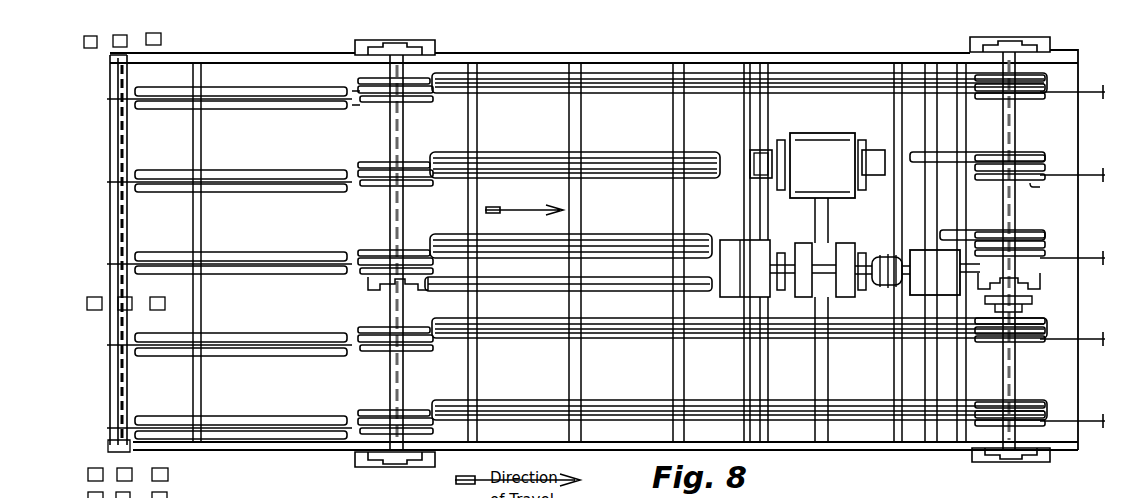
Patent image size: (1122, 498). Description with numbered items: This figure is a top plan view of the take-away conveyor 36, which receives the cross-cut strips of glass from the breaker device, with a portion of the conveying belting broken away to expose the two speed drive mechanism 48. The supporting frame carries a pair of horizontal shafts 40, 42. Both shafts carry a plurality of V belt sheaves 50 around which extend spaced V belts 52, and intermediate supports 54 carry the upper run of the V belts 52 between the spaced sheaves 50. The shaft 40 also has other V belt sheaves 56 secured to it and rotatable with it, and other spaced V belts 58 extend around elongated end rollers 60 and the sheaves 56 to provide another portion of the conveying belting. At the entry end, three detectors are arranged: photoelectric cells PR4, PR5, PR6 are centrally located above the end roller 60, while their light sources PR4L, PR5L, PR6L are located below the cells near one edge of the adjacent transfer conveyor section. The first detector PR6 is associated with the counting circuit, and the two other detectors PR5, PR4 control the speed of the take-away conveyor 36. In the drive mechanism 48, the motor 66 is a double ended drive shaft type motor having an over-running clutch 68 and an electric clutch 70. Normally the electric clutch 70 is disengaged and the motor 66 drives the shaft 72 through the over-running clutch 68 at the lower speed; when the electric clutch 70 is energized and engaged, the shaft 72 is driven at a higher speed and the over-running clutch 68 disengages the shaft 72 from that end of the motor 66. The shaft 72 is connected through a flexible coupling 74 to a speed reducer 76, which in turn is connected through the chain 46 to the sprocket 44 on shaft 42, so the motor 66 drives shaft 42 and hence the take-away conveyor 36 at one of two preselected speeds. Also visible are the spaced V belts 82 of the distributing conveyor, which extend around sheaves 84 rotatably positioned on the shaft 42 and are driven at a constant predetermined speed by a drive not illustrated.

The take-away conveyor 36 is at (817, 456).
The horizontal shaft 40 is at (403, 136).
The horizontal shaft 42 is at (1003, 126).
The sprocket 44 is at (1017, 292).
The chain 46 is at (975, 300).
The two speed drive mechanism 48 is at (749, 204).
The V belt sheaves 50 is at (420, 77).
The V belts 52 is at (538, 160).
The intermediate supports 54 is at (632, 72).
The V belt sheaves 56 is at (410, 96).
The V belts 58 is at (352, 100).
The end rollers 60 is at (108, 131).
The motor 66 is at (837, 135).
The over-running clutch 68 is at (891, 153).
The electric clutch 70 is at (752, 152).
The shaft 72 is at (823, 268).
The flexible coupling 74 is at (885, 256).
The speed reducer 76 is at (910, 290).
The V belts 82 is at (1066, 93).
The sheaves 84 is at (1030, 186).
The photoelectric cell PR4 is at (155, 284).
The photoelectric cell PR5 is at (120, 311).
The photoelectric cell PR6 is at (93, 297).
The light source PR4L is at (162, 39).
The light source PR5L is at (120, 35).
The light source PR6L is at (83, 43).